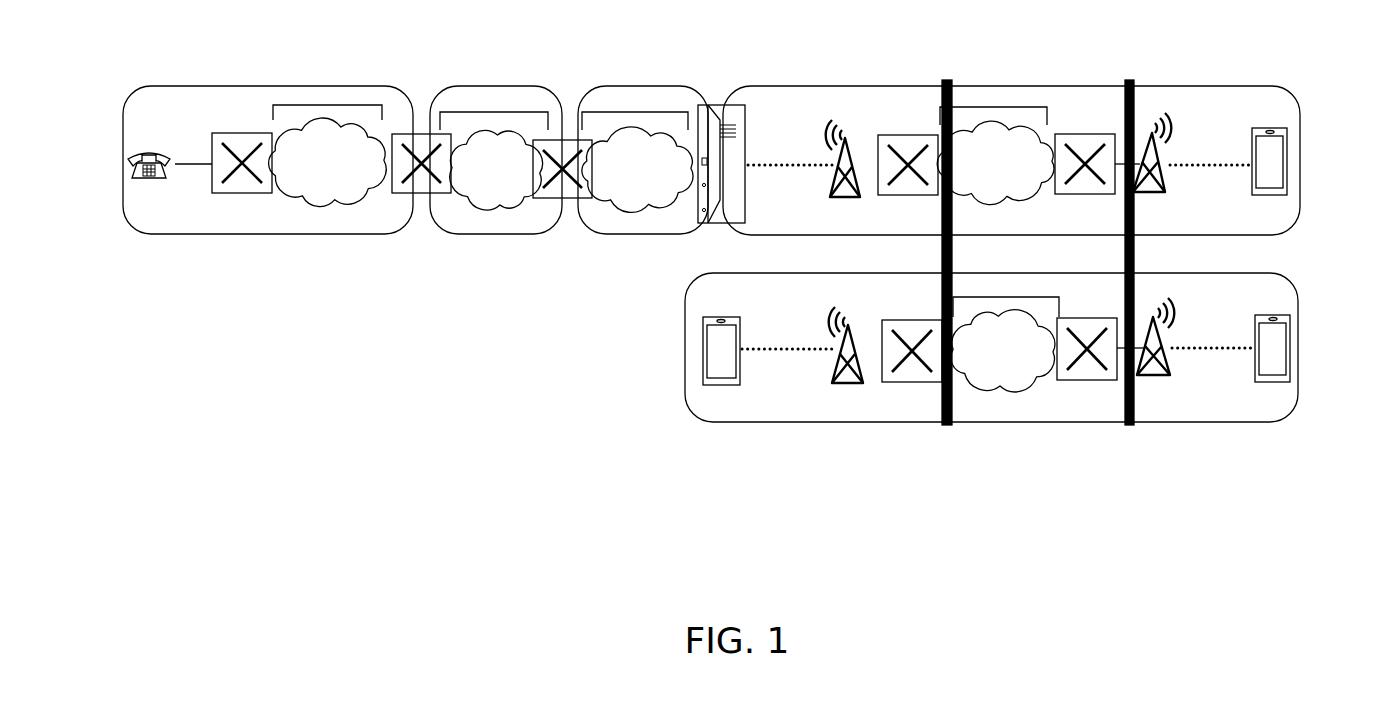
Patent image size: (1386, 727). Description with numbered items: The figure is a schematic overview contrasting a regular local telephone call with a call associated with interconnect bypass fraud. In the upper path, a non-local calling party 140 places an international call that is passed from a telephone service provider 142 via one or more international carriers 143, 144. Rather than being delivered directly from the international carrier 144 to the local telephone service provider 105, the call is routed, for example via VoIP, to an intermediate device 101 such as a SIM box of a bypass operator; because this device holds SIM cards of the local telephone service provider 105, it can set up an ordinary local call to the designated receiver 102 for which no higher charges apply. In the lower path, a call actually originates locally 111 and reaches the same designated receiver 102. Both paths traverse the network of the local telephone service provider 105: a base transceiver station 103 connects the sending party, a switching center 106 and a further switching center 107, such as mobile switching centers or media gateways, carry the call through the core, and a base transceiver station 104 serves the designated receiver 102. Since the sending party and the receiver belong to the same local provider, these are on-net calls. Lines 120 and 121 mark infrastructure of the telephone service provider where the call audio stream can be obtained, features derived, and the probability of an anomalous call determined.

The calling party 140 is at (150, 150).
The telephone service provider 142 is at (325, 105).
The non-local carrier 143 is at (491, 112).
The international carrier 144 is at (633, 112).
The intermediate device 101 is at (701, 105).
The base transceiver station 103 is at (820, 118).
The switching center 106 is at (906, 135).
The line 120 is at (947, 80).
The local telephone service provider 105 is at (999, 107).
The line 121 is at (1128, 80).
The base transceiver station 104 is at (1174, 111).
The designated receiver 102 is at (1272, 128).
The switching center 107 is at (1086, 195).
The locally originating caller 111 is at (703, 385).